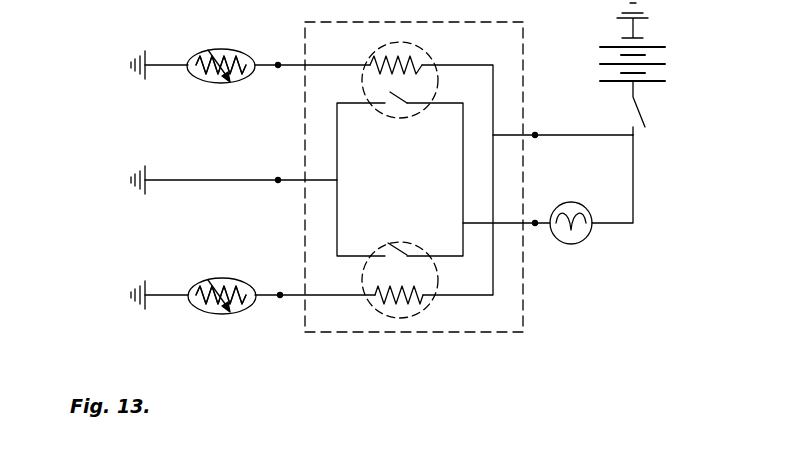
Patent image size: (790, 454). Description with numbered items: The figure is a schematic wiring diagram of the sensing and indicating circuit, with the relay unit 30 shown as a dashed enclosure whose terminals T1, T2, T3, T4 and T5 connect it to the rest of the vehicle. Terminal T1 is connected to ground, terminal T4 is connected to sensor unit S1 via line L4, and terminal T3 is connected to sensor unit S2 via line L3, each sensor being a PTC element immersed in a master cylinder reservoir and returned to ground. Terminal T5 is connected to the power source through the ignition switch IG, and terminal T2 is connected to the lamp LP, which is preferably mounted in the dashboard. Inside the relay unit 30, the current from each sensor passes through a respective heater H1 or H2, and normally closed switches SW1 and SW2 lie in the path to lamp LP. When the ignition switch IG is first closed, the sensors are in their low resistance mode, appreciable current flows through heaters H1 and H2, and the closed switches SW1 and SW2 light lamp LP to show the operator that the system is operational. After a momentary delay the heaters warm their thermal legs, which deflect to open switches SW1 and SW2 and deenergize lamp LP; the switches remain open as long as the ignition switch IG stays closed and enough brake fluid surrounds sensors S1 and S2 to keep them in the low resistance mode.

The relay unit 30 is at (522, 297).
The terminal T1 is at (278, 179).
The terminal T2 is at (535, 226).
The terminal T3 is at (282, 298).
The terminal T4 is at (283, 46).
The terminal T5 is at (535, 134).
The sensor unit S1 is at (221, 55).
The sensor unit S2 is at (232, 279).
The line L3 is at (283, 266).
The line L4 is at (262, 68).
The heater H1 is at (422, 62).
The heater H2 is at (412, 304).
The switch SW1 is at (404, 104).
The switch SW2 is at (416, 229).
The lamp LP is at (588, 236).
The ignition switch IG is at (646, 112).